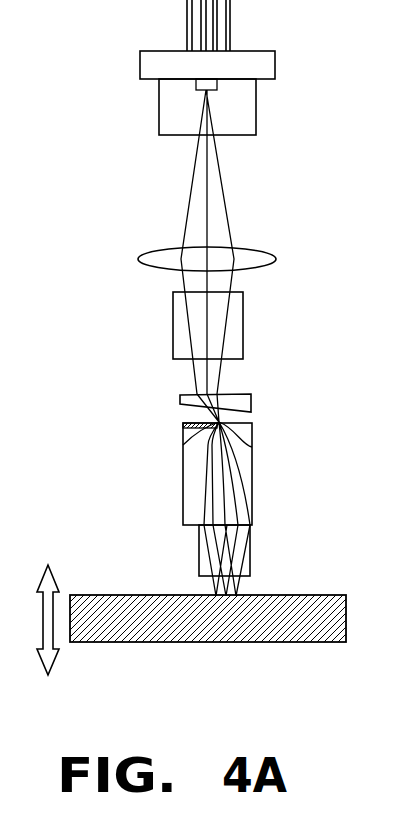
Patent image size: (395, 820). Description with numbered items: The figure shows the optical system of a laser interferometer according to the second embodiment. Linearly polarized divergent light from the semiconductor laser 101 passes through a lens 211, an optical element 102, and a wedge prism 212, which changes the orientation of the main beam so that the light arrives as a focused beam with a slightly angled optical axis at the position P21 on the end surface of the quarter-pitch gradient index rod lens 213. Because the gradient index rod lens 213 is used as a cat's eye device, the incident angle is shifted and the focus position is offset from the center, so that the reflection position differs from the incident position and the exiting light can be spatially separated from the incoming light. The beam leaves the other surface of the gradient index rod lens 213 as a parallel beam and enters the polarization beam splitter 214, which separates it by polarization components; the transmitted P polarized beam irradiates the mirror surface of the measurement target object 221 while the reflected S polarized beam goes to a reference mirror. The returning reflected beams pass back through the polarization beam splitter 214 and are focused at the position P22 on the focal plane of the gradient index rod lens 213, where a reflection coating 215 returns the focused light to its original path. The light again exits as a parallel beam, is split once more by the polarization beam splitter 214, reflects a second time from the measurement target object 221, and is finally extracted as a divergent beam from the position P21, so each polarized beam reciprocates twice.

The semiconductor laser 101 is at (258, 106).
The lens 211 is at (258, 248).
The optical element 102 is at (244, 320).
The wedge prism 212 is at (252, 402).
The gradient index rod lens 213 is at (183, 503).
The polarization beam splitter 214 is at (251, 551).
The reflection coating 215 is at (182, 424).
The measurement target object 221 is at (291, 642).
The position P21 is at (252, 447).
The position P22 is at (183, 445).